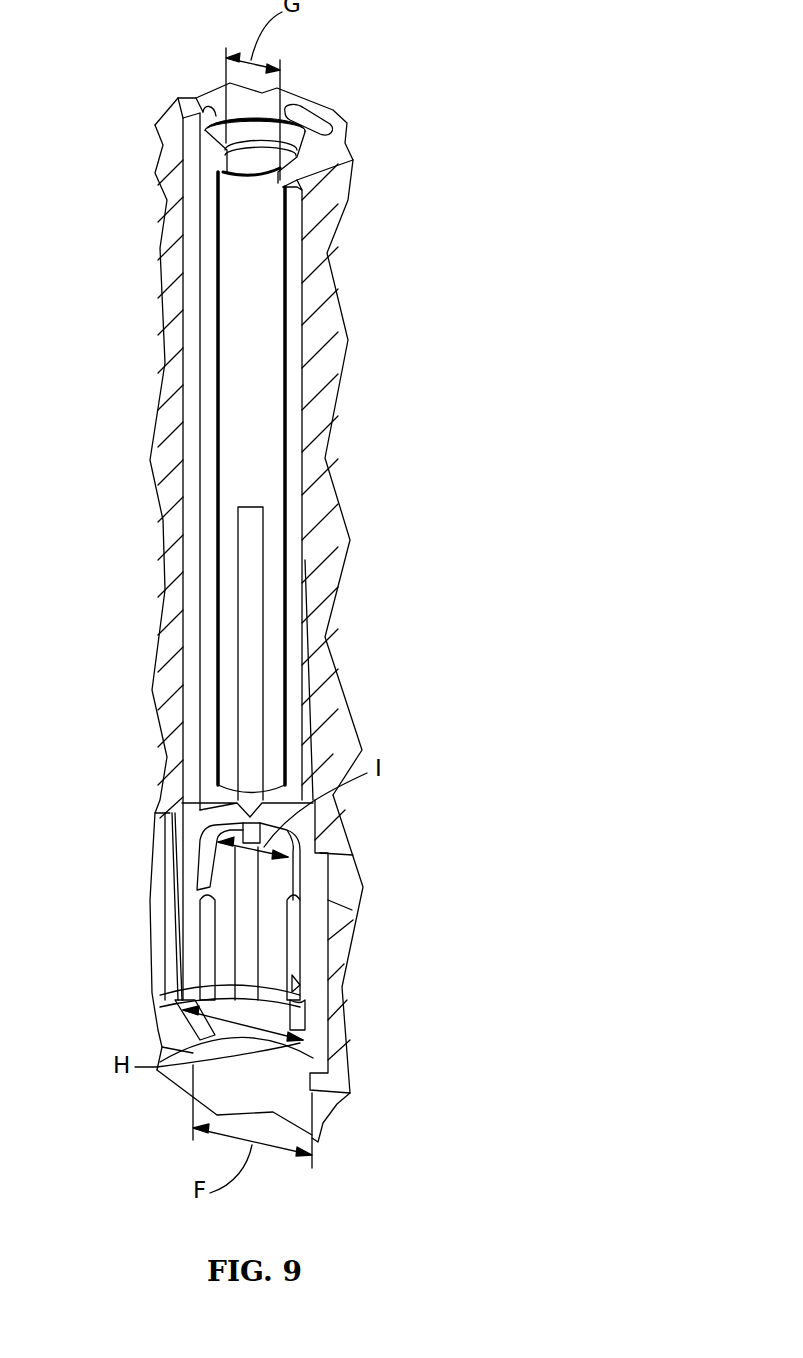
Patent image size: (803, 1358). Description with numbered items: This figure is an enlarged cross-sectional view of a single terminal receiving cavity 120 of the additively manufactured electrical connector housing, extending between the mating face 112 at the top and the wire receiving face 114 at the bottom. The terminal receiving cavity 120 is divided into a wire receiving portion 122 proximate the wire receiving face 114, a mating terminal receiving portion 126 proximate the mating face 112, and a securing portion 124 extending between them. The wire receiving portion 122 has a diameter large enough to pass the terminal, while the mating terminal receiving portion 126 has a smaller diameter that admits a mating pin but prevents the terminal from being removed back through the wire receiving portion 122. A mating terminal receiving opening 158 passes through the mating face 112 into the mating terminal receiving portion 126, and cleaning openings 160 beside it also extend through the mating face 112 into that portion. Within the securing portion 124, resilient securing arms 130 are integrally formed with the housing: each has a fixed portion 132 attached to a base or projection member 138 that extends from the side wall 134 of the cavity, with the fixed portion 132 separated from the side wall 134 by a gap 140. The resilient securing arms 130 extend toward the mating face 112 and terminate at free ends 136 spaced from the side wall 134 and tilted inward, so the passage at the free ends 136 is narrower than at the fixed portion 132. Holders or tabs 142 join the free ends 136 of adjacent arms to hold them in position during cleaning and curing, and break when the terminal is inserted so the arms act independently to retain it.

The mating face 112 is at (337, 143).
The wire receiving face 114 is at (337, 1107).
The terminal receiving cavity 120 is at (253, 433).
The wire receiving portion 122 is at (235, 1070).
The securing portion 124 is at (323, 872).
The mating terminal receiving portion 126 is at (262, 198).
The resilient securing arms 130 is at (225, 868).
The fixed portion 132 is at (287, 993).
The side wall 134 is at (188, 908).
The free ends 136 is at (215, 838).
The base member or projection member 138 is at (313, 1028).
The gap 140 is at (183, 1010).
The holders or tabs 142 is at (252, 817).
The mating terminal receiving openings 158 is at (257, 153).
The cleaning openings 160 is at (212, 116).